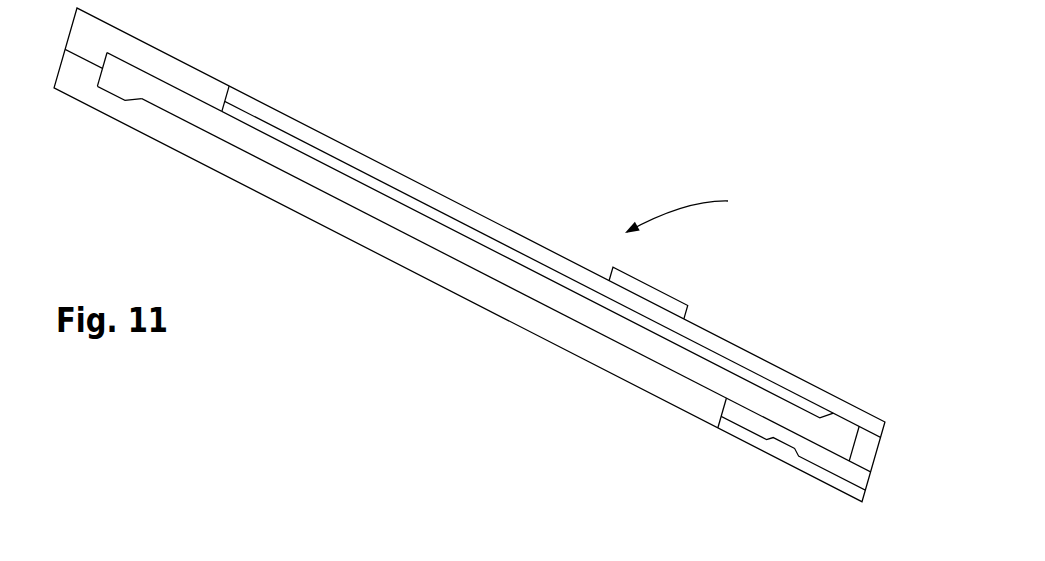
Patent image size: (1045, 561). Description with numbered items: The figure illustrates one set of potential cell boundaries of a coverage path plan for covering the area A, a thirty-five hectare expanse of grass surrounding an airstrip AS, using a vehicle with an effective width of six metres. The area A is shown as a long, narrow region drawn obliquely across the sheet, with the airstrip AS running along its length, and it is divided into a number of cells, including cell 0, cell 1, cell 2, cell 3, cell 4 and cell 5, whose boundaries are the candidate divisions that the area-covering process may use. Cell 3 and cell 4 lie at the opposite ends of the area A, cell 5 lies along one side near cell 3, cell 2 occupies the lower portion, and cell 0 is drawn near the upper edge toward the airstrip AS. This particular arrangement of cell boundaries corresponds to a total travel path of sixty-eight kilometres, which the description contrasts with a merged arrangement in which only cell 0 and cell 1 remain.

The cell 1 is at (862, 452).
The cell 2 is at (545, 328).
The cell 3 is at (80, 68).
The cell 4 is at (780, 448).
The cell 5 is at (153, 66).
The cell 0 is at (652, 293).
The airstrip AS is at (422, 232).
The area A is at (688, 206).